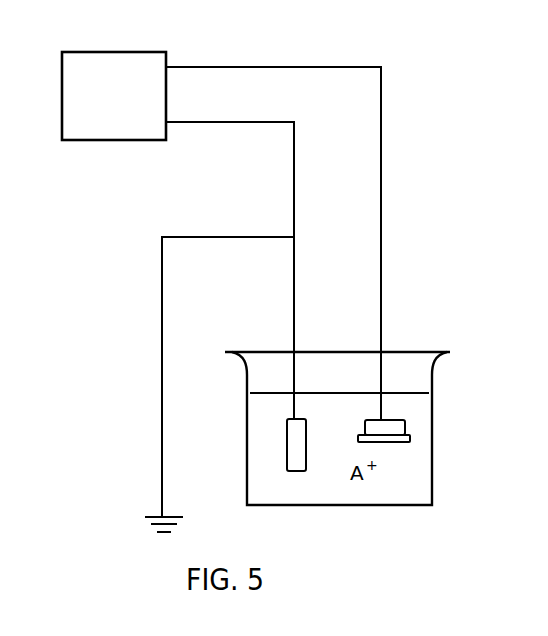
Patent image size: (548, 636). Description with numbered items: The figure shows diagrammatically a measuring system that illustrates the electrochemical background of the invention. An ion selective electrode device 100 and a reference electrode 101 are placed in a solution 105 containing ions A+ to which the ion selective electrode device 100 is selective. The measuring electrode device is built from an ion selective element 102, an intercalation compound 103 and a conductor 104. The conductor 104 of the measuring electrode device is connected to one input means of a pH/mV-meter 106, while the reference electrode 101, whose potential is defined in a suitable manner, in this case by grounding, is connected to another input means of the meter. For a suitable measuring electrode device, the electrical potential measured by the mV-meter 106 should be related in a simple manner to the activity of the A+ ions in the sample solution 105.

The ion selective electrode device 100 is at (424, 428).
The reference electrode 101 is at (298, 465).
The ion selective element 102 is at (403, 441).
The intercalation compound 103 is at (392, 425).
The conductor 104 is at (383, 232).
The solution 105 is at (410, 497).
The mV-meter 106 is at (137, 60).